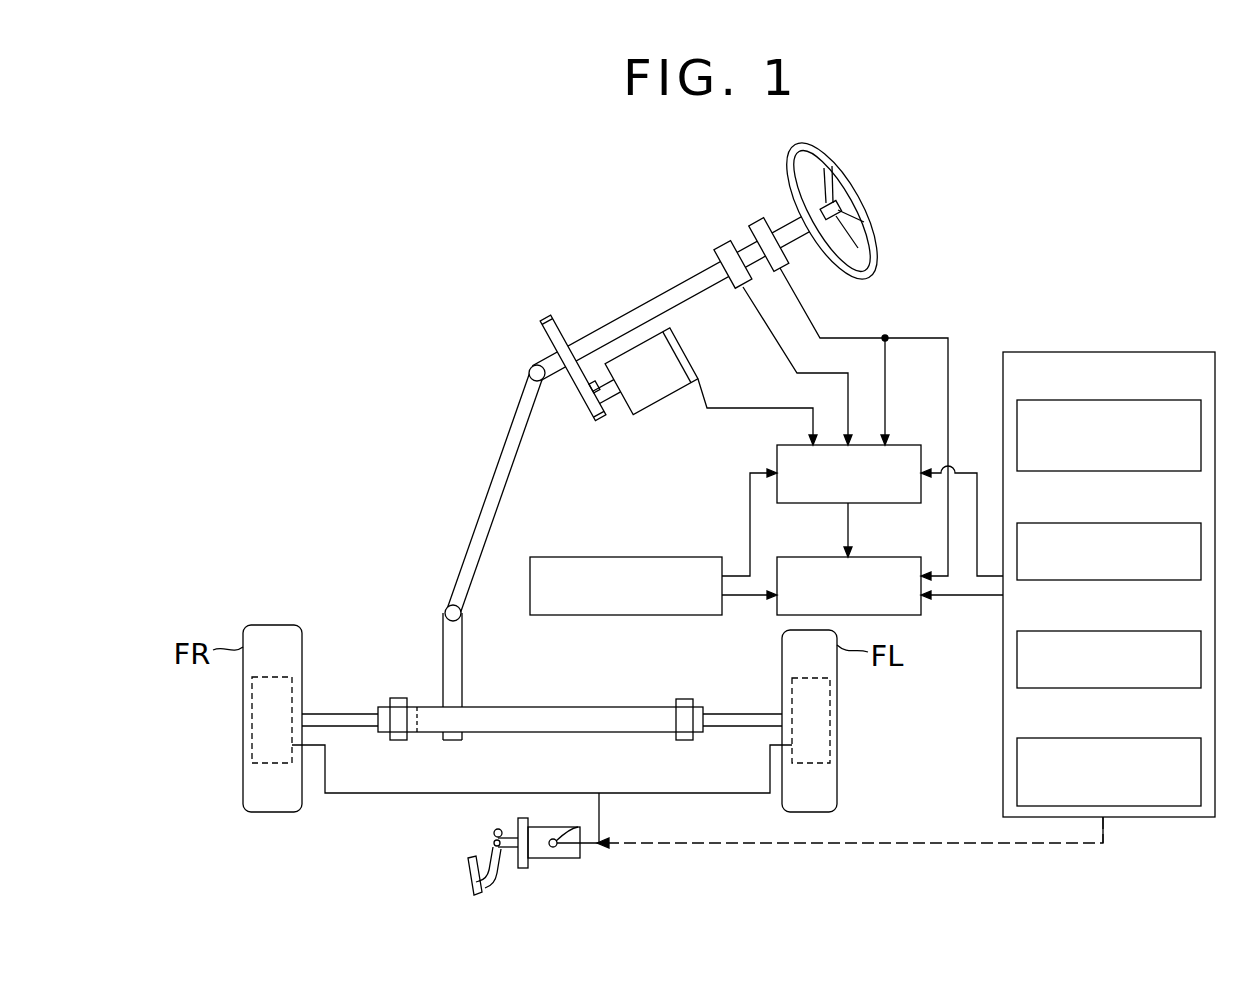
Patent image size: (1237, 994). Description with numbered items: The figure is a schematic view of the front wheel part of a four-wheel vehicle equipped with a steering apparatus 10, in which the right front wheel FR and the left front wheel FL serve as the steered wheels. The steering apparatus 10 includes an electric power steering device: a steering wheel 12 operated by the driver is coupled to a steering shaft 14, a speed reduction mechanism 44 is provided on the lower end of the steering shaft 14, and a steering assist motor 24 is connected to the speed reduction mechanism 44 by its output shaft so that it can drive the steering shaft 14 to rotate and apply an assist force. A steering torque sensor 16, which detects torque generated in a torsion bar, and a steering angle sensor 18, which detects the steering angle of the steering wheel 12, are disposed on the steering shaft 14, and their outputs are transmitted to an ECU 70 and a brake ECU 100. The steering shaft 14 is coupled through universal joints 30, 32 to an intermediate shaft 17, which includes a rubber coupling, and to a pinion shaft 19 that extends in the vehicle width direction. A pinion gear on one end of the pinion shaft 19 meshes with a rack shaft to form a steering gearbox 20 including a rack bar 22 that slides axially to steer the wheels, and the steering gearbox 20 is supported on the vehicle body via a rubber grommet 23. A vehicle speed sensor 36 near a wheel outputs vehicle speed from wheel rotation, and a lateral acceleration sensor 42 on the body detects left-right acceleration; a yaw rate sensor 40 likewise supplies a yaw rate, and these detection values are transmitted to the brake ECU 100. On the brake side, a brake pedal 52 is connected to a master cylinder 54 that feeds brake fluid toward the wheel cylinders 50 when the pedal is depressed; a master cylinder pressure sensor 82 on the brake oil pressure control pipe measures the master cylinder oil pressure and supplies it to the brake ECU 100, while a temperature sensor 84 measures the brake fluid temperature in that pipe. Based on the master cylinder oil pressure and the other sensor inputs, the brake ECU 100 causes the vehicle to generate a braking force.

The steering apparatus 10 is at (366, 239).
The steering wheel 12 is at (865, 198).
The steering shaft 14 is at (647, 308).
The steering torque sensor 16 is at (720, 248).
The intermediate shaft 17 is at (483, 490).
The steering angle sensor 18 is at (758, 228).
The pinion shaft 19 is at (443, 660).
The steering gearbox 20 is at (540, 733).
The rack bar 22 is at (338, 730).
The rubber grommet 23 is at (398, 741).
The steering assist motor 24 is at (660, 402).
The universal joint 30 is at (528, 373).
The universal joint 32 is at (445, 615).
The vehicle speed sensor 36 is at (650, 557).
The yaw rate sensor 40 is at (1110, 523).
The lateral acceleration sensor 42 is at (1110, 400).
The speed reduction mechanism 44 is at (548, 323).
The wheel cylinder 50 is at (252, 722).
The brake pedal 52 is at (466, 860).
The master cylinder 54 is at (578, 825).
The ECU 70 is at (905, 445).
The master cylinder pressure sensor 82 is at (1110, 631).
The temperature sensor 84 is at (1110, 738).
The brake ECU 100 is at (885, 557).